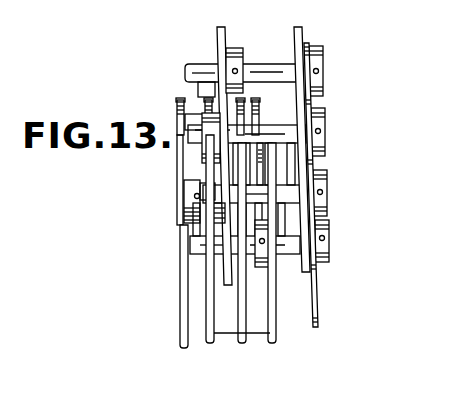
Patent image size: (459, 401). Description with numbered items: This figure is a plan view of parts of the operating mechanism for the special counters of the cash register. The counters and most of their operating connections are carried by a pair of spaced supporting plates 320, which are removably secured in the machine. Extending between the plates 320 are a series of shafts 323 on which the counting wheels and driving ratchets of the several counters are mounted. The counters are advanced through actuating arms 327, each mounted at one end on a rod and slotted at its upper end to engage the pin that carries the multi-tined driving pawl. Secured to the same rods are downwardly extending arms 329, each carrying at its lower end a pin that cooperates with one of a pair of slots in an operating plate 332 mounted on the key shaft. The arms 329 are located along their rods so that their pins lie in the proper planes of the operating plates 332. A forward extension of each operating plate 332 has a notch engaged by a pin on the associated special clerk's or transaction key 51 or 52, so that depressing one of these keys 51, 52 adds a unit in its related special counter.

The special key 51 is at (180, 302).
The special key 52 is at (241, 239).
The supporting plate 320 is at (222, 28).
The shaft 323 is at (268, 143).
The actuating arm 327 is at (308, 108).
The arm 329 is at (238, 49).
The operating plate 332 is at (207, 99).